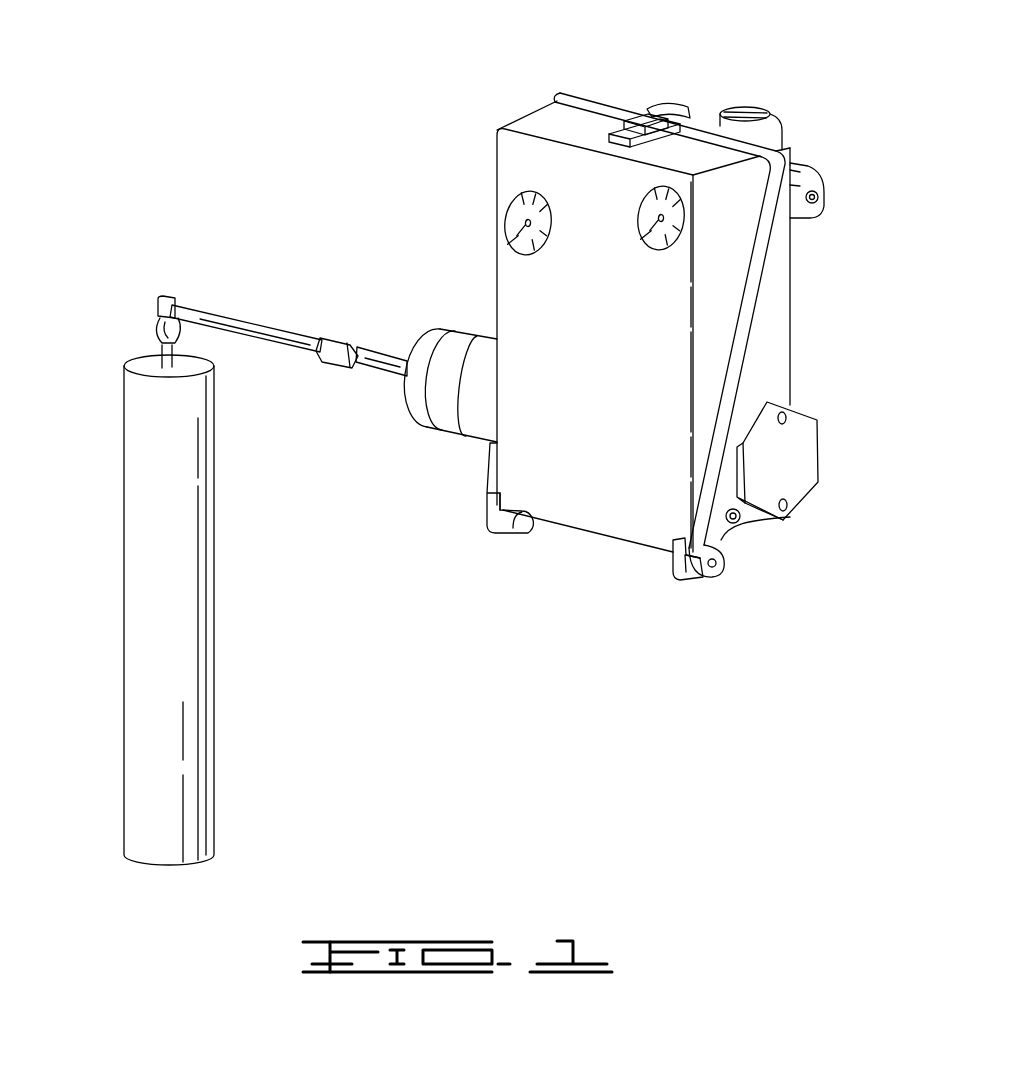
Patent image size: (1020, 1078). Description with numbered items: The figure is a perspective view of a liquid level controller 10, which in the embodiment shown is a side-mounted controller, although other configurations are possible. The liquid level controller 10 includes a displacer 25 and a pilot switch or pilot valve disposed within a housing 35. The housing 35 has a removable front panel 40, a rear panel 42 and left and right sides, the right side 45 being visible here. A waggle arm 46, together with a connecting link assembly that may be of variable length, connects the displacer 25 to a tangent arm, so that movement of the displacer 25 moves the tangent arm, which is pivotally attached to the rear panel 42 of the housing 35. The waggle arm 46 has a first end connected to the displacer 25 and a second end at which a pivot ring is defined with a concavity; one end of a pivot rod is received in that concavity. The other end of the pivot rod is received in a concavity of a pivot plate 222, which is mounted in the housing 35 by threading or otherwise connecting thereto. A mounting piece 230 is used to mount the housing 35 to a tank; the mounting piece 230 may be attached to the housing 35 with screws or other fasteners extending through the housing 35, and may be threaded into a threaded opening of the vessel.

The liquid level controller 10 is at (400, 86).
The displacer 25 is at (129, 706).
The housing 35 is at (800, 247).
The removable front panel 40 is at (517, 280).
The rear panel 42 is at (780, 370).
The right side 45 is at (775, 308).
The waggle arm 46 is at (277, 322).
The pivot plate 222 is at (797, 465).
The mounting piece 230 is at (452, 412).